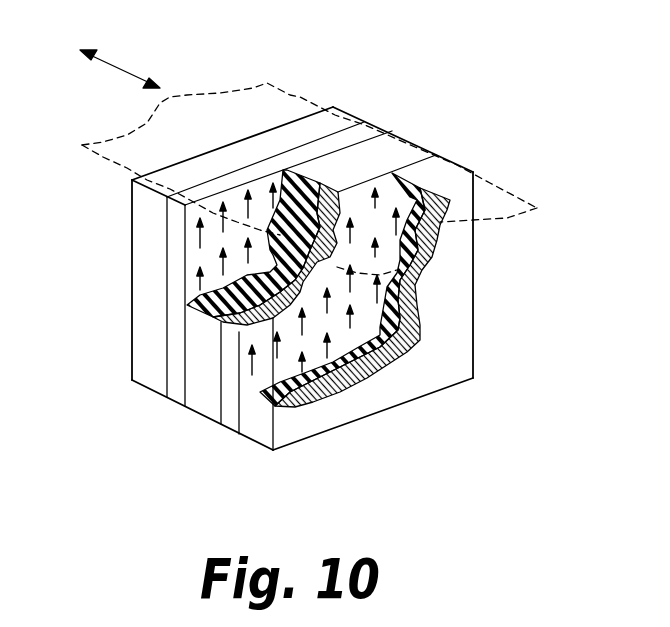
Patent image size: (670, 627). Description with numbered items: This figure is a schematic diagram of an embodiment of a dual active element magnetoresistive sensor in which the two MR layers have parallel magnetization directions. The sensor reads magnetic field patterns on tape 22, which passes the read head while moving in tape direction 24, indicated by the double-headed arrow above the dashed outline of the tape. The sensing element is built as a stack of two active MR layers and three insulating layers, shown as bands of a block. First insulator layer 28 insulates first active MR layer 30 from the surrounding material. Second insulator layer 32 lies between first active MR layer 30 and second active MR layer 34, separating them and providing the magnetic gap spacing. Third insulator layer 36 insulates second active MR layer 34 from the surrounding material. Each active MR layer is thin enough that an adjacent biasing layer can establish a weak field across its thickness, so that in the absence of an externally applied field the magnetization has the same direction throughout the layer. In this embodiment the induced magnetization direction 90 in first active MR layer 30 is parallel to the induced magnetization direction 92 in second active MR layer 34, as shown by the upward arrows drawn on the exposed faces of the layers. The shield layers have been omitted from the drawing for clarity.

The tape 22 is at (309, 138).
The tape direction 24 is at (120, 67).
The first insulator layer 28 is at (148, 372).
The first active MR layer 30 is at (180, 387).
The second insulator layer 32 is at (215, 407).
The second active MR layer 34 is at (232, 418).
The third insulator layer 36 is at (263, 432).
The induced magnetization direction 90 is at (200, 279).
The induced magnetization direction 92 is at (380, 293).